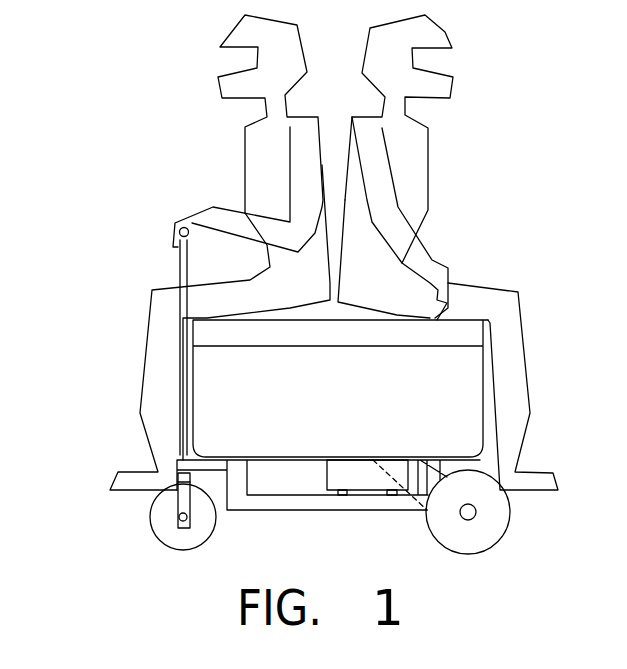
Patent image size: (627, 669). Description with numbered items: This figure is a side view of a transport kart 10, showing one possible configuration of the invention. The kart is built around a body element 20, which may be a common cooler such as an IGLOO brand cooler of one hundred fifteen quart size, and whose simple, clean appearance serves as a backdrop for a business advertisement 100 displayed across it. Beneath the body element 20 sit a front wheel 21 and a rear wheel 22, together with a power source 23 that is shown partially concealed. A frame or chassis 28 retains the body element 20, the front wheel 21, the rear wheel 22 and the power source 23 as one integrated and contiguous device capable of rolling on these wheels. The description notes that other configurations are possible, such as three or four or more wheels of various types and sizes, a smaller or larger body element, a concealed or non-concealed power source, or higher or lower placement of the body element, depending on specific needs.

The transport kart 10 is at (495, 377).
The business advertisement 100 is at (215, 383).
The body element 20 is at (290, 448).
The front wheel 21 is at (168, 530).
The rear wheel 22 is at (440, 528).
The power source 23 is at (360, 482).
The frame or chassis 28 is at (238, 490).